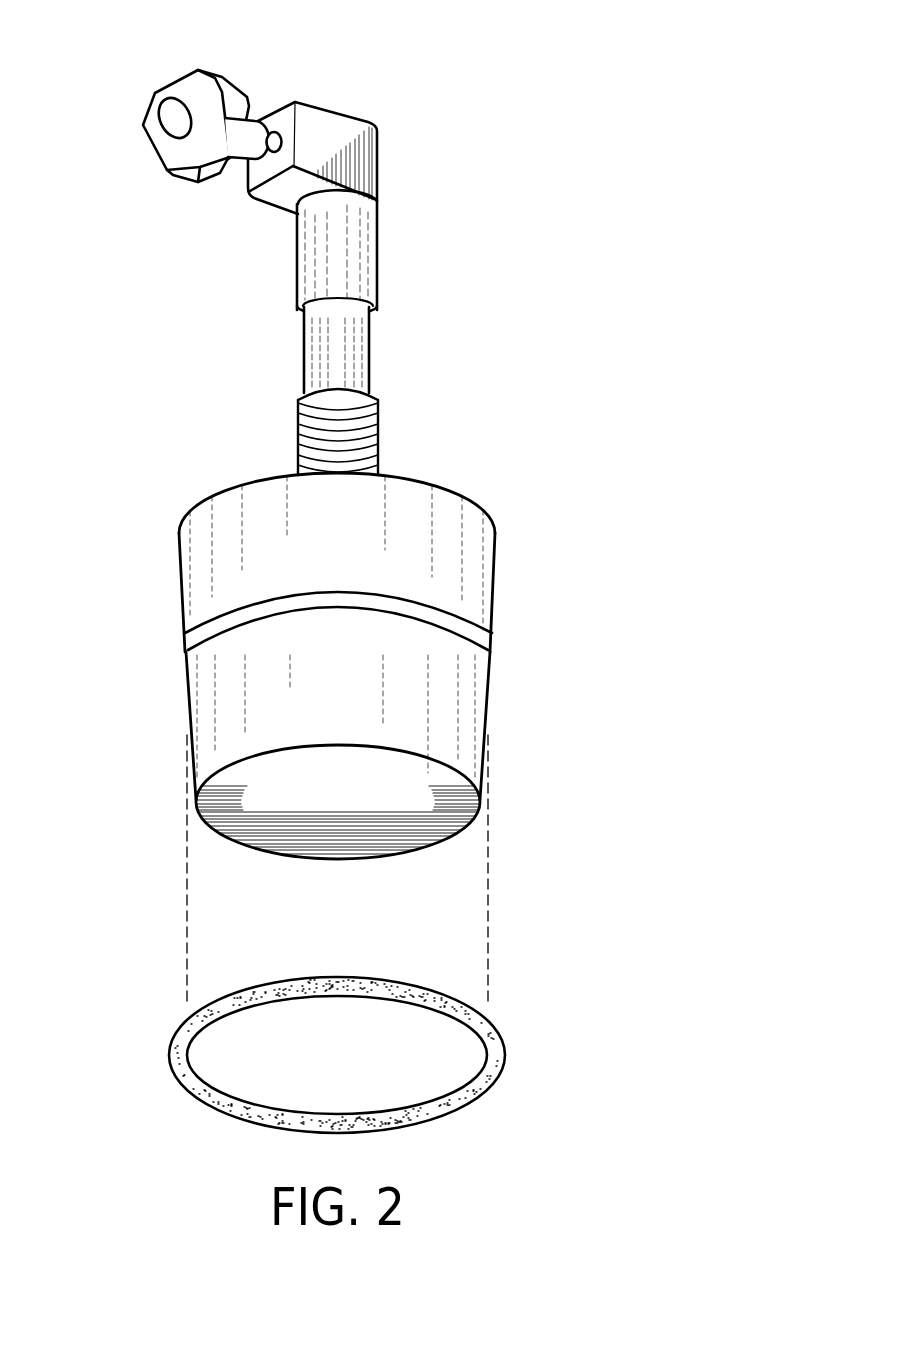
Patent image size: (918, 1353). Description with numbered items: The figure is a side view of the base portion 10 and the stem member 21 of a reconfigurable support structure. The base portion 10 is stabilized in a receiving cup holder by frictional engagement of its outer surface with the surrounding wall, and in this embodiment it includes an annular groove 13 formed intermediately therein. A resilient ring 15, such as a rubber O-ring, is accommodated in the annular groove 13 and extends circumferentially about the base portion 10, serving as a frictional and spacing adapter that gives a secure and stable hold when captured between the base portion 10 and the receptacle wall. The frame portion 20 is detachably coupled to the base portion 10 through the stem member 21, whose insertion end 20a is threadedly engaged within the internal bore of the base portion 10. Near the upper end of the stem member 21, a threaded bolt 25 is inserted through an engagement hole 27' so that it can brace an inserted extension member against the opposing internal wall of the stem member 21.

The base portion 10 is at (562, 572).
The annular groove 13 is at (186, 653).
The resilient ring 15 is at (498, 1033).
The frame portion 20 is at (429, 180).
The insertion end 20a is at (415, 427).
The stem member 21 is at (370, 344).
The threaded bolt 25 is at (152, 146).
The engagement hole 27' is at (258, 87).